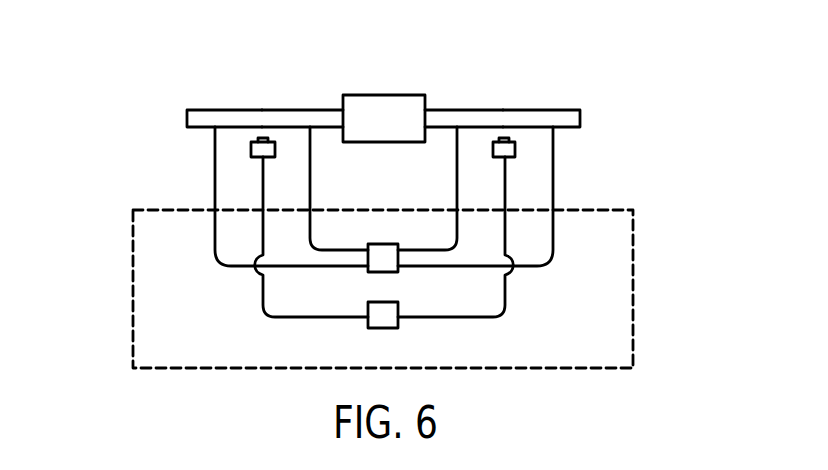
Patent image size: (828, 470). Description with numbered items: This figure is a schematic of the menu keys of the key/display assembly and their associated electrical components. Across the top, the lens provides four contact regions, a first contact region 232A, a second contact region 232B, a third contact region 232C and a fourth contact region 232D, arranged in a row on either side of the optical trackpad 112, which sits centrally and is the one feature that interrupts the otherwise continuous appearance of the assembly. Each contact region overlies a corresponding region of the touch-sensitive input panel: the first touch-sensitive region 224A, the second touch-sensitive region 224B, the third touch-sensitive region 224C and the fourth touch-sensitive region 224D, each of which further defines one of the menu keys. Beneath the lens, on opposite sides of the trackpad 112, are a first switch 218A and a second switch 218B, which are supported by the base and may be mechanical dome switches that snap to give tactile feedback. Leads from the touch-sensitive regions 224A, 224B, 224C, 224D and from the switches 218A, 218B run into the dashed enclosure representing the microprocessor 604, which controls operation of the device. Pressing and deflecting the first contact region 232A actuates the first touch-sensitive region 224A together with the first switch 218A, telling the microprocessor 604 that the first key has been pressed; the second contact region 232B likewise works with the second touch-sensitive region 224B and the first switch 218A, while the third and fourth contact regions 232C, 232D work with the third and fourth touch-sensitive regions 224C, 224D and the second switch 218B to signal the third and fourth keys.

The optical trackpad 112 is at (385, 95).
The first contact region 232A is at (224, 110).
The second contact region 232B is at (294, 110).
The third contact region 232C is at (468, 110).
The fourth contact region 232D is at (551, 110).
The first touch-sensitive region 224A is at (200, 128).
The second touch-sensitive region 224B is at (320, 128).
The third touch-sensitive region 224C is at (437, 128).
The fourth touch-sensitive region 224D is at (567, 128).
The first switch 218A is at (251, 148).
The second switch 218B is at (515, 147).
The microprocessor 604 is at (633, 272).